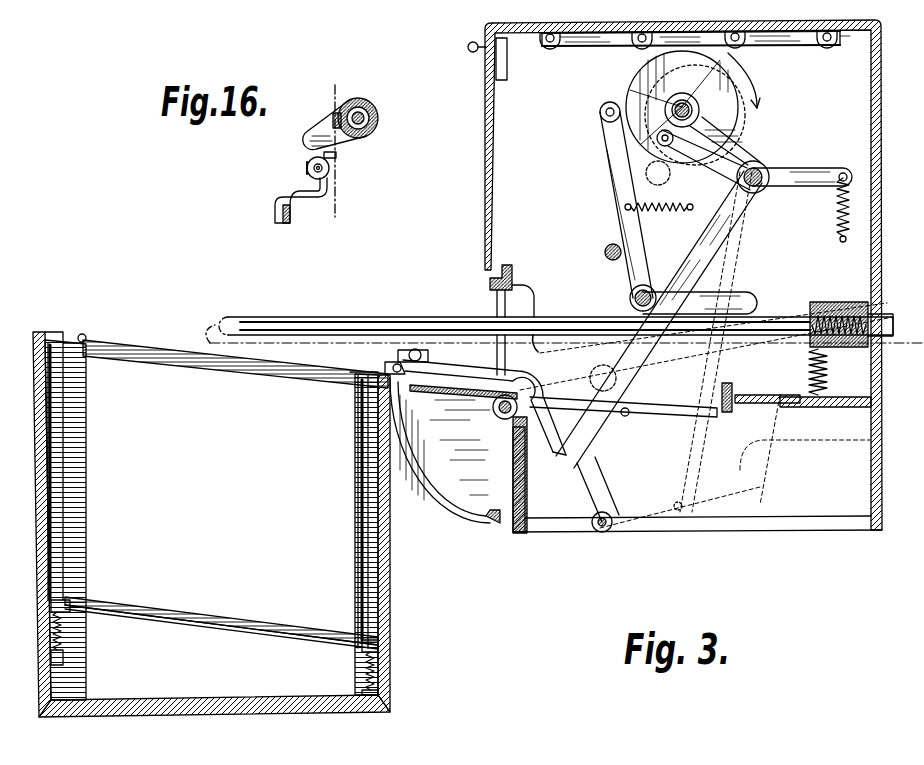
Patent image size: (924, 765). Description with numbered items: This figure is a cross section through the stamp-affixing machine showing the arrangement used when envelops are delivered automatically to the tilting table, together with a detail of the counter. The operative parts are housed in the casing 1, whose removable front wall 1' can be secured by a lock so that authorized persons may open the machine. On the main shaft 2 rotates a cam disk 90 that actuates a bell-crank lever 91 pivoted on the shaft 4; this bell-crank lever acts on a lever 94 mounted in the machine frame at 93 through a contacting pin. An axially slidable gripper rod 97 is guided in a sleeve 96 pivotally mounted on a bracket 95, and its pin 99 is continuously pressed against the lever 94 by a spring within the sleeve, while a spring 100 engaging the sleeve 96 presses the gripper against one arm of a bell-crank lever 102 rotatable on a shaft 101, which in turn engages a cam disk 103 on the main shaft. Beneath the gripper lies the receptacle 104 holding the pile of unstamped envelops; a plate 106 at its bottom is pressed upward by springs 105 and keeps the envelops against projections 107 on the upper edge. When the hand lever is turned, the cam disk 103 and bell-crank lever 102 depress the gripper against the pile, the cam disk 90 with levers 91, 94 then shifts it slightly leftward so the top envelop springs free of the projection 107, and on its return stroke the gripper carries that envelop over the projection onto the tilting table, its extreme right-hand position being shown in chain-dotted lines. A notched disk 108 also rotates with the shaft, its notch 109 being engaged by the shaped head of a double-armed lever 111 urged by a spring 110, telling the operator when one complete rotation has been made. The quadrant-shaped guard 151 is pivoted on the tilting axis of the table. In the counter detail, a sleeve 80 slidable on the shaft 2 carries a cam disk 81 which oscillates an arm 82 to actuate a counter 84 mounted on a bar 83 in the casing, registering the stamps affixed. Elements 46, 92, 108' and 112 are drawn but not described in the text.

In FIG. 3, the casing 1 is at (675, 276).
In FIG. 3, the front wall 1' is at (503, 145).
In FIG. 16, the main shaft 2 is at (366, 130).
In FIG. 3, the shaft 4 is at (759, 168).
In FIG. 3, the link bar 46 is at (668, 416).
In FIG. 16, the sleeve 80 is at (368, 106).
In FIG. 16, the cam disk 81 is at (325, 131).
In FIG. 16, the arm 82 is at (337, 156).
In FIG. 16, the bar 83 is at (291, 213).
In FIG. 16, the counter 84 is at (306, 168).
In FIG. 3, the cam disk 90 is at (735, 125).
In FIG. 3, the bell-crank lever 91 is at (700, 254).
In FIG. 3, the curved arm pivot 92 is at (556, 458).
In FIG. 3, the pivot 93 is at (600, 532).
In FIG. 3, the lever 94 is at (893, 328).
In FIG. 3, the bracket 95 is at (858, 383).
In FIG. 3, the sleeve 96 is at (838, 299).
In FIG. 3, the gripper rod 97 is at (348, 318).
In FIG. 3, the pin 99 is at (422, 355).
In FIG. 3, the spring 100 is at (806, 408).
In FIG. 3, the shaft 101 is at (630, 299).
In FIG. 3, the bell-crank lever 102 is at (604, 166).
In FIG. 3, the cam disk 103 is at (645, 68).
In FIG. 3, the receptacle 104 is at (388, 570).
In FIG. 3, the springs 105 is at (70, 640).
In FIG. 3, the plate 106 is at (216, 625).
In FIG. 3, the projections 107 is at (92, 331).
In FIG. 3, the notched disk 108 is at (756, 80).
In FIG. 3, the lower slide rail 108' is at (221, 610).
In FIG. 3, the notch 109 is at (665, 177).
In FIG. 3, the spring 110 is at (838, 208).
In FIG. 3, the double-armed lever 111 is at (805, 171).
In FIG. 3, the link pin 112 is at (690, 168).
In FIG. 3, the guard 151 is at (428, 485).